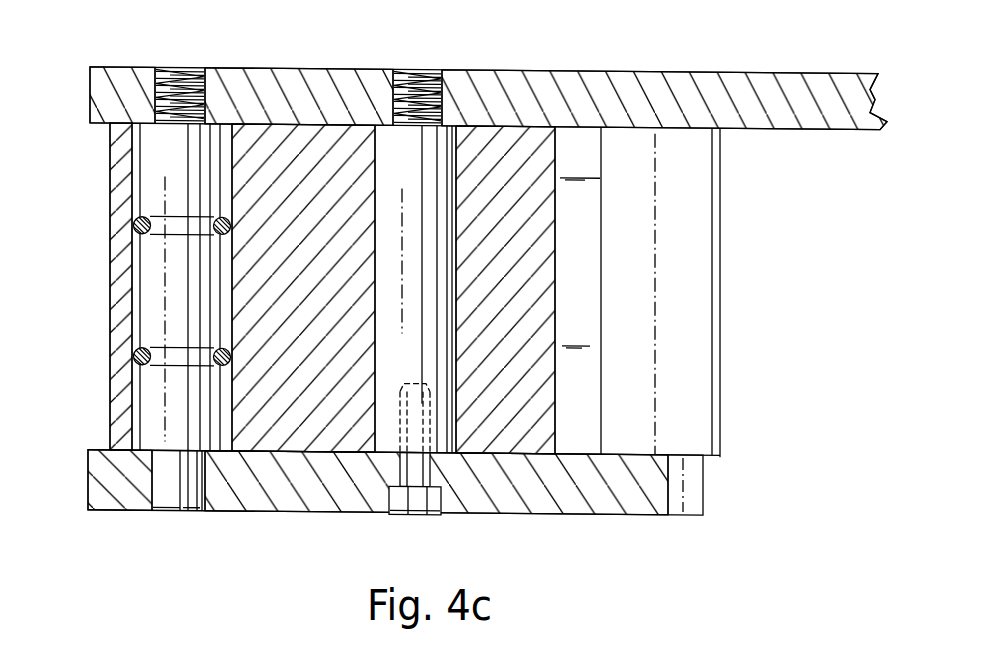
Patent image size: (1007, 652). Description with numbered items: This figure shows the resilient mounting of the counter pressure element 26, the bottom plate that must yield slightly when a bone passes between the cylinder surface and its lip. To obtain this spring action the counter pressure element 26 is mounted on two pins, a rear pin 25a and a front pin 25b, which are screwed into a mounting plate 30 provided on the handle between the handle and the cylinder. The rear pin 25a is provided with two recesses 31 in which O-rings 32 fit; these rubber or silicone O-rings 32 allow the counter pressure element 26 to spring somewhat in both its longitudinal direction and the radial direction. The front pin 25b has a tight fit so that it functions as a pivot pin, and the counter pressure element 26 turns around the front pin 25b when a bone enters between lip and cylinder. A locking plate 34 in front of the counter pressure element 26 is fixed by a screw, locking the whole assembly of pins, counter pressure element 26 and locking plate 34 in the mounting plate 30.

The mounting plate 30 is at (130, 67).
The locking plate 34 is at (112, 510).
The rear pin 25a is at (200, 300).
The front pin 25b is at (447, 244).
The counter pressure element 26 is at (705, 232).
The recesses 31 is at (158, 214).
The O-rings 32 is at (134, 226).